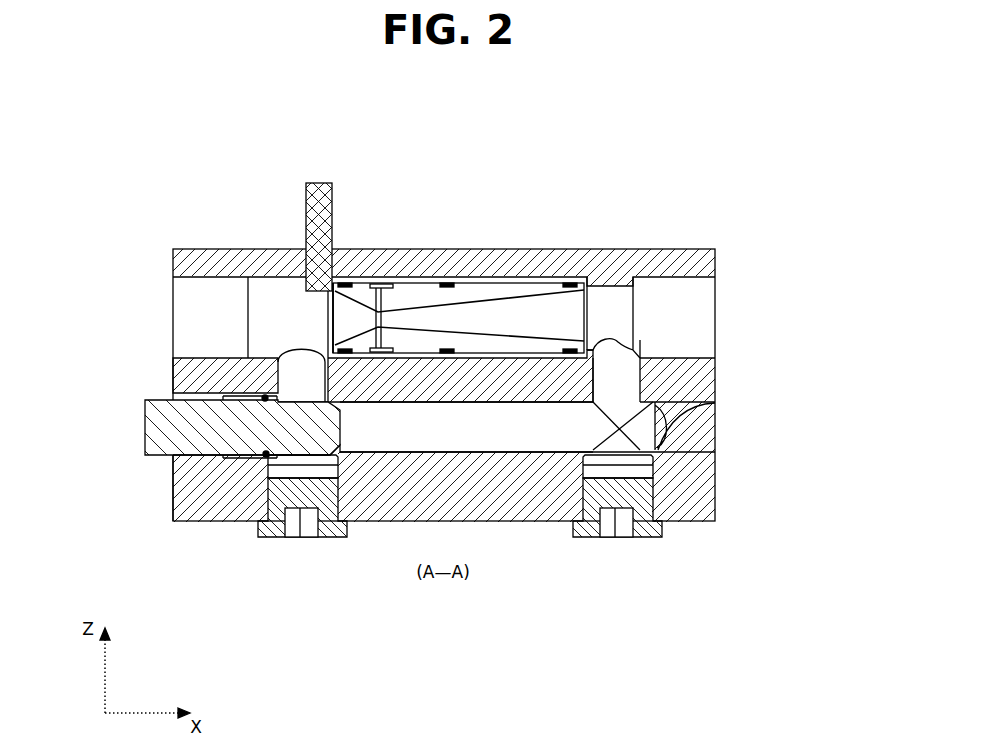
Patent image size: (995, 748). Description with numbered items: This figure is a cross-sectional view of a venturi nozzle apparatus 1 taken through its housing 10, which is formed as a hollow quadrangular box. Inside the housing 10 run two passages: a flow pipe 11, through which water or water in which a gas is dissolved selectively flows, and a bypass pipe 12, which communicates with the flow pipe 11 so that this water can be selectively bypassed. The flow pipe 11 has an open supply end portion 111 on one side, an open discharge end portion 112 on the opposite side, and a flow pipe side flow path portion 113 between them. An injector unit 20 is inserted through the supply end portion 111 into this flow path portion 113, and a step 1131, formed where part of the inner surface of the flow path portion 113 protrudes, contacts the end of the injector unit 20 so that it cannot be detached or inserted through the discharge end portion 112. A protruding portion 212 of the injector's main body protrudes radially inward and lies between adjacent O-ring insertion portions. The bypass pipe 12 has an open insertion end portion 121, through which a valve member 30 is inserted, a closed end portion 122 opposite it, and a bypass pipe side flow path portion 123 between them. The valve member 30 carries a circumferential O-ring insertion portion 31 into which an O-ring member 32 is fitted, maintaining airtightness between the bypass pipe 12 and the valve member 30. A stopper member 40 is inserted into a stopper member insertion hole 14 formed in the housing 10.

The venturi nozzle apparatus 1 is at (390, 91).
The housing 10 is at (680, 262).
The flow pipe 11 is at (200, 256).
The supply end portion 111 is at (173, 315).
The discharge end portion 112 is at (715, 312).
The flow pipe side flow path portion 113 is at (289, 297).
The step 1131 is at (605, 285).
The bypass pipe 12 is at (385, 452).
The insertion end portion 121 is at (173, 460).
The closed end portion 122 is at (715, 403).
The bypass pipe side flow path portion 123 is at (536, 428).
The stopper member insertion hole 14 is at (332, 249).
The injector unit 20 is at (490, 293).
The protruding portion 212 is at (440, 283).
The valve member 30 is at (147, 427).
The O-ring insertion portion 31 is at (264, 458).
The O-ring member 32 is at (268, 456).
The stopper member 40 is at (318, 183).